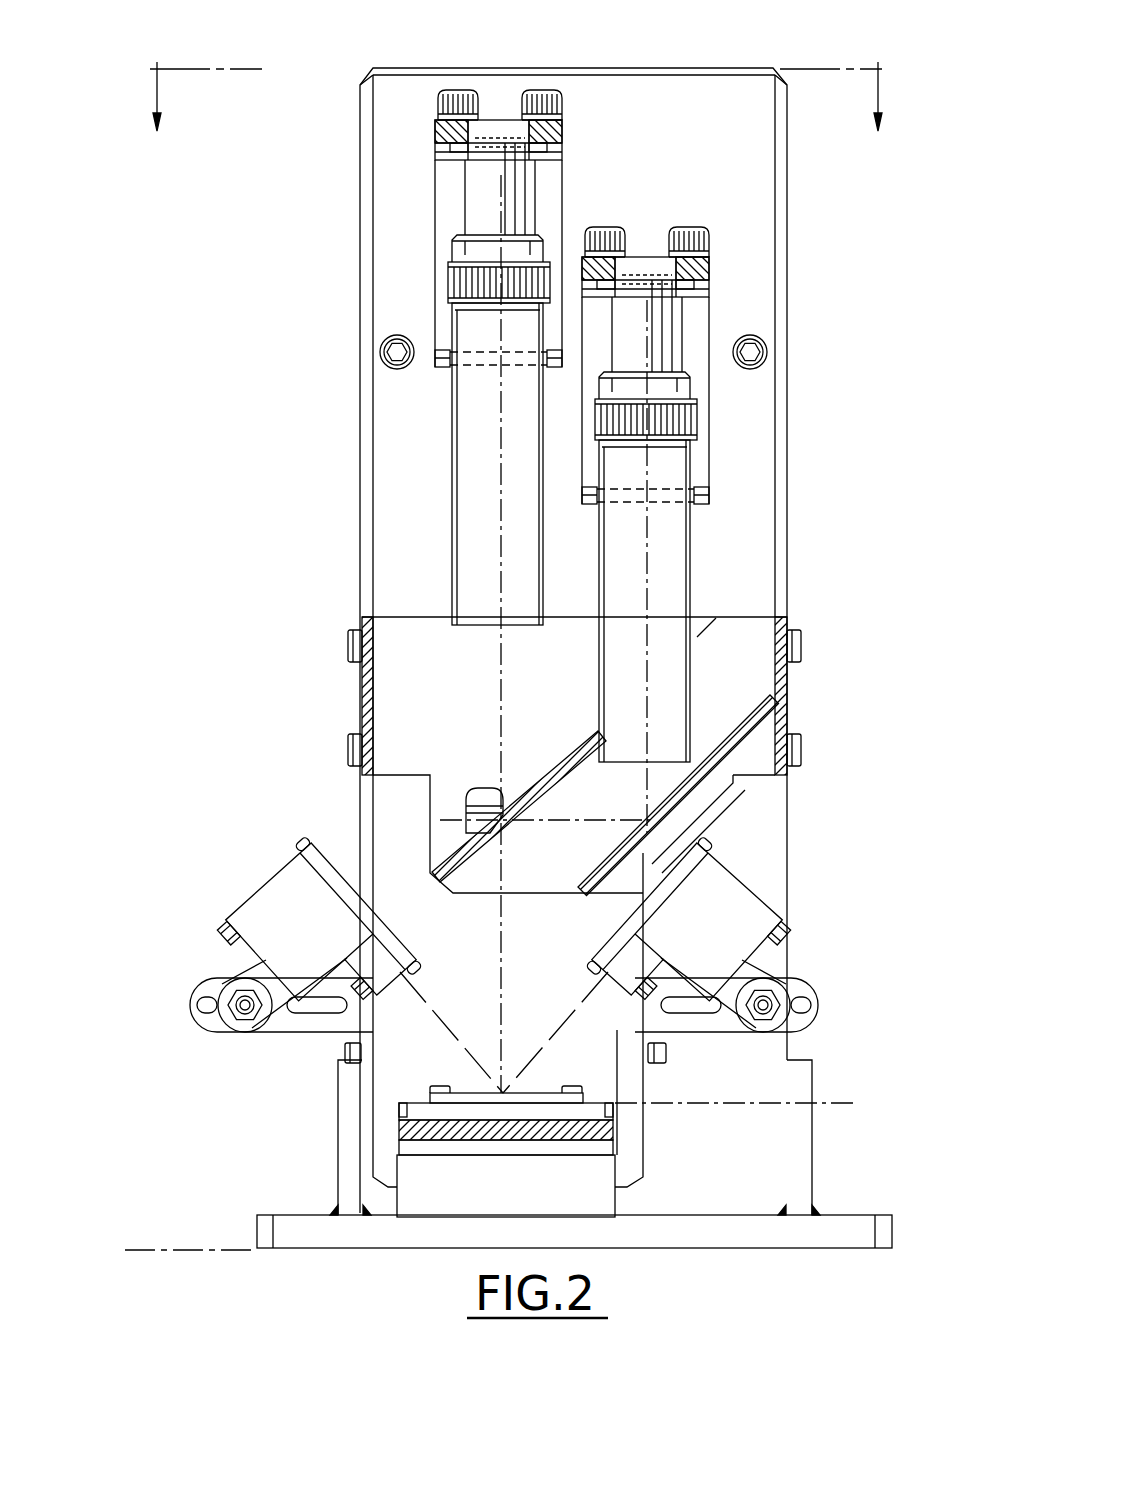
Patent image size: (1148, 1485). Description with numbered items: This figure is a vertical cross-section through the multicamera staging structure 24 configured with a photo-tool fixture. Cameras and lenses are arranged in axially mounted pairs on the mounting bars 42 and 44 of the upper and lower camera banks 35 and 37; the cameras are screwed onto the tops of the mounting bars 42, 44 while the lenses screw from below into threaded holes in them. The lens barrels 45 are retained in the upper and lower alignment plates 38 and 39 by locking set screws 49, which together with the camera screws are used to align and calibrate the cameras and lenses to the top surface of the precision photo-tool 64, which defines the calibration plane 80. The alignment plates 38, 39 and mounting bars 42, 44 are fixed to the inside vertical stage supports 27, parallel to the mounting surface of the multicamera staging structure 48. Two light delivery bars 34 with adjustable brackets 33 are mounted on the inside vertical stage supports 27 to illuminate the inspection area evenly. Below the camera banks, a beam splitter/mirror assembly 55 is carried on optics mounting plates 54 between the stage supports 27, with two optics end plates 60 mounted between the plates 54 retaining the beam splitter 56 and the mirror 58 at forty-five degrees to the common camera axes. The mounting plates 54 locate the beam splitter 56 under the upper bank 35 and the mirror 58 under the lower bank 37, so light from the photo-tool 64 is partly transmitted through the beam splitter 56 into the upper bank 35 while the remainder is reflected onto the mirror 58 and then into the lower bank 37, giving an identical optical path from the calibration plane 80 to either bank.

The multicamera staging structure 24 is at (628, 62).
The inside vertical stage supports 27 is at (780, 172).
The adjustable brackets 33 is at (822, 988).
The light delivery bars 34 is at (750, 880).
The upper camera bank 35 is at (432, 353).
The lower camera bank 37 is at (700, 492).
The upper alignment plate 38 is at (473, 396).
The lower alignment plate 39 is at (713, 506).
The mounting bar 42 is at (473, 120).
The mounting bar 44 is at (671, 260).
The lens barrels 45 is at (424, 464).
The mounting surface of multicamera staging structure 48 is at (170, 1248).
The locking set screws 49 is at (622, 601).
The optics mounting plates 54 is at (352, 690).
The beam splitter/mirror assembly 55 is at (579, 870).
The beam splitter 56 is at (557, 748).
The mirror 58 is at (665, 822).
The optics end plates 60 is at (393, 615).
The precision photo-tool 64 is at (563, 1095).
The calibration plane 80 is at (838, 1102).